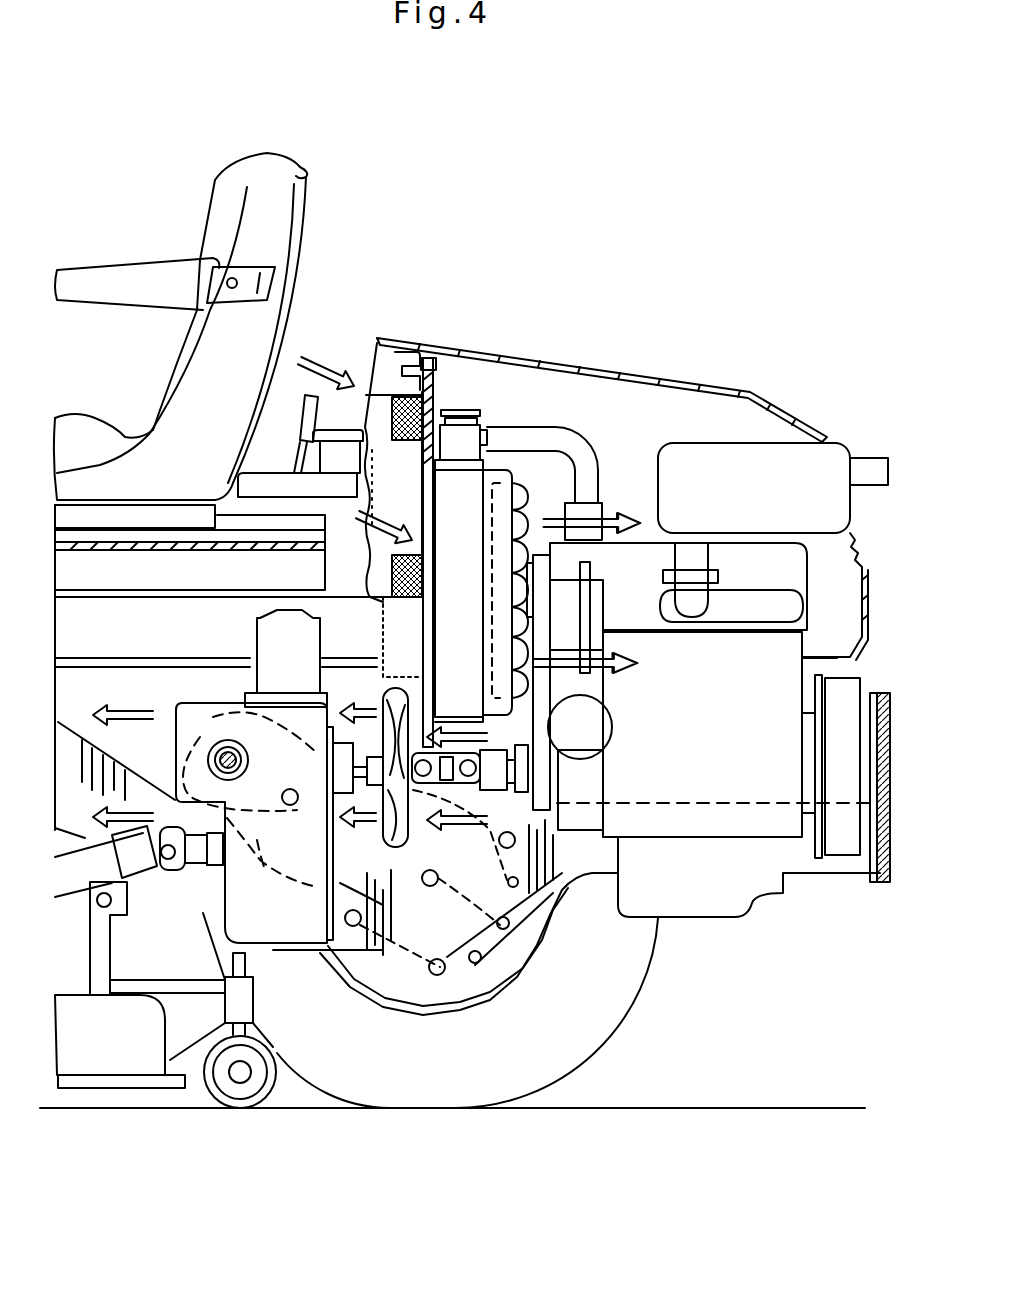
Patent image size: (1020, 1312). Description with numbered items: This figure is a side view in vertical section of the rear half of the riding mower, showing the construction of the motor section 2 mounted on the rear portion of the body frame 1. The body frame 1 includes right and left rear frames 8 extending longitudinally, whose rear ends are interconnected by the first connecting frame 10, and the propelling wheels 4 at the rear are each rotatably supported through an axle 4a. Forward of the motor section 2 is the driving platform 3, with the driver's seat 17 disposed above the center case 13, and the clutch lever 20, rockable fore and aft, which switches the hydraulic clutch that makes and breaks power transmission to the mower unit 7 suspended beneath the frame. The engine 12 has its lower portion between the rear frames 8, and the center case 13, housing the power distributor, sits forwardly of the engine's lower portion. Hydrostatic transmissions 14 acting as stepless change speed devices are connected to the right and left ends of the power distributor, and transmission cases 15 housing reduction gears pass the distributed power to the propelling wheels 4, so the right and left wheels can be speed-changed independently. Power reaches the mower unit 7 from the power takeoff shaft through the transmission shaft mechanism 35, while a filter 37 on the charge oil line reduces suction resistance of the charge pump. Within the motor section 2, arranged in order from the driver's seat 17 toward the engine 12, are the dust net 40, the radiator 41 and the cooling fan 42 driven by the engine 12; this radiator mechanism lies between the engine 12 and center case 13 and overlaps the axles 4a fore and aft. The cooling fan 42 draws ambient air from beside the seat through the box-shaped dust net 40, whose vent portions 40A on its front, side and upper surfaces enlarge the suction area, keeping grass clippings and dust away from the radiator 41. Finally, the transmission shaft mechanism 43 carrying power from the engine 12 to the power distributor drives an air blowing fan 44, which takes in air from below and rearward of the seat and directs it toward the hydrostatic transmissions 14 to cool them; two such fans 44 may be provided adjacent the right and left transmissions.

The body frame 1 is at (605, 890).
The motor section 2 is at (624, 362).
The driving platform 3 is at (164, 178).
The propelling wheels 4 is at (597, 1043).
The axle 4a is at (527, 927).
The mower unit 7 is at (140, 1088).
The rear frames 8 is at (450, 950).
The first connecting frame 10 is at (873, 883).
The engine 12 is at (728, 917).
The center case 13 is at (173, 713).
The hydrostatic transmissions 14 is at (254, 823).
The transmission cases 15 is at (503, 943).
The driver's seat 17 is at (297, 200).
The clutch lever 20 is at (297, 430).
The transmission shaft mechanism 35 is at (140, 880).
The filter 37 is at (257, 636).
The dust net 40 is at (386, 370).
The vent portions 40A is at (373, 575).
The radiator 41 is at (483, 427).
The cooling fan 42 is at (527, 487).
The transmission shaft mechanism 43 is at (447, 777).
The air blowing fan 44 is at (407, 853).